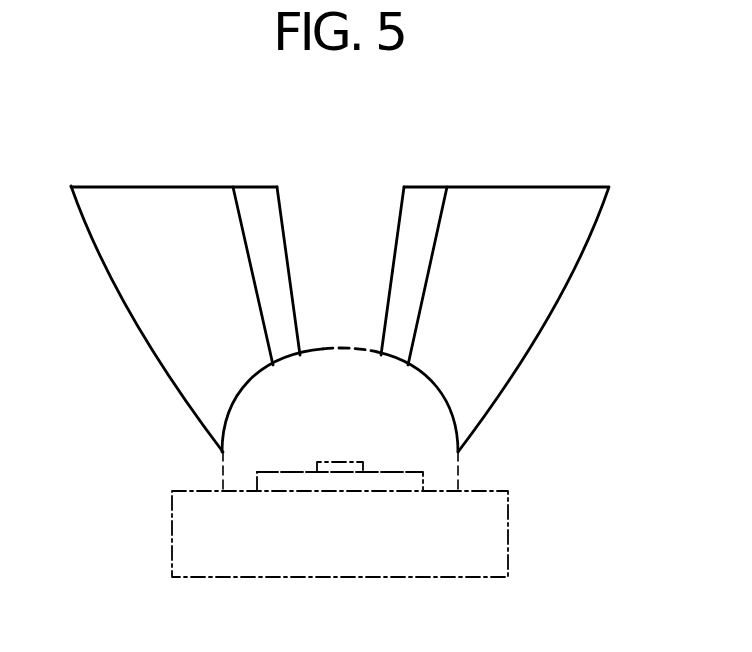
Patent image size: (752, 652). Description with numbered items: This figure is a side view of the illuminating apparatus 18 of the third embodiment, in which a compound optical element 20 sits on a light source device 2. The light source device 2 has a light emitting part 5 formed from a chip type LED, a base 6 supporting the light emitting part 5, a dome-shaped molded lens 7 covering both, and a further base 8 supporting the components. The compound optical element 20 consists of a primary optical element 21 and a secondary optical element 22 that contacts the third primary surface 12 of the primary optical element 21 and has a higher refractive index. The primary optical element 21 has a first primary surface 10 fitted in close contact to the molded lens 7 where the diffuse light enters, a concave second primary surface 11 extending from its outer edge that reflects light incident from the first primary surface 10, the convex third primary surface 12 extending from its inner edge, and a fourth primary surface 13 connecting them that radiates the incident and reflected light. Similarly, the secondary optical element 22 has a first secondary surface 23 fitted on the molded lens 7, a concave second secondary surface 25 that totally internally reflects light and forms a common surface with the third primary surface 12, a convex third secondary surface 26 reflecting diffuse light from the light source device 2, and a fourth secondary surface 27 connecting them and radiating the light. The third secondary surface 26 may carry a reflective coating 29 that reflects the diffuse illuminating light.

The light source device 2 is at (577, 412).
The light emitting part 5 is at (363, 462).
The base 6 is at (363, 472).
The molded lens 7 is at (423, 480).
The base 8 is at (500, 545).
The primary surface-1 10 is at (224, 448).
The primary surface-2 11 is at (127, 315).
The primary surface-3 12 is at (260, 323).
The primary surface-4 13 is at (116, 187).
The illuminating apparatus 18 is at (641, 163).
The compound optical element 20 is at (303, 98).
The primary optical element 21 is at (202, 195).
The secondary optical element 22 is at (248, 198).
The secondary surface-1 23 is at (403, 366).
The secondary surface-2 25 is at (445, 212).
The secondary surface-3 26 is at (393, 270).
The secondary surface-4 27 is at (423, 187).
The reflective coating 29 is at (402, 221).